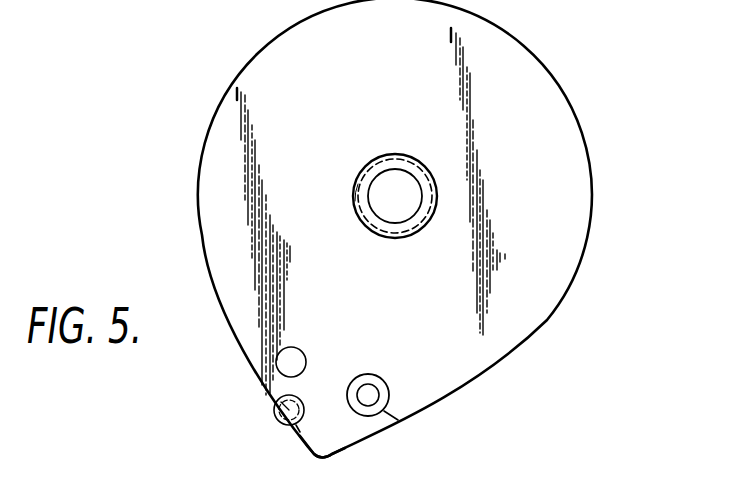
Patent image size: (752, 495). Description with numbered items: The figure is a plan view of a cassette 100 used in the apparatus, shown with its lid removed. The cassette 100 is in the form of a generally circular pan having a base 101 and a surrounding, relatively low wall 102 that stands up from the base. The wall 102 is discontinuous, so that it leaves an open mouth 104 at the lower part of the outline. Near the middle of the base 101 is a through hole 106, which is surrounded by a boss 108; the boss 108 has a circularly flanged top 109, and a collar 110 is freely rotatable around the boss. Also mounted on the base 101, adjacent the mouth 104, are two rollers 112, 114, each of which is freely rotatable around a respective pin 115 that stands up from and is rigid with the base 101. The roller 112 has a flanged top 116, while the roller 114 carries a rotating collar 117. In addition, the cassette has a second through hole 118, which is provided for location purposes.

The cassette 100 is at (589, 255).
The base 101 is at (421, 284).
The wall 102 is at (592, 210).
The open mouth 104 is at (307, 446).
The through hole 106 is at (382, 189).
The boss 108 is at (364, 164).
The circularly flanged top 109 is at (395, 168).
The collar 110 is at (367, 217).
The roller 112 is at (274, 409).
The roller 114 is at (390, 396).
The pin 115 is at (280, 400).
The flanged top 116 is at (295, 433).
The rotating collar 117 is at (398, 420).
The through hole 118 is at (294, 349).